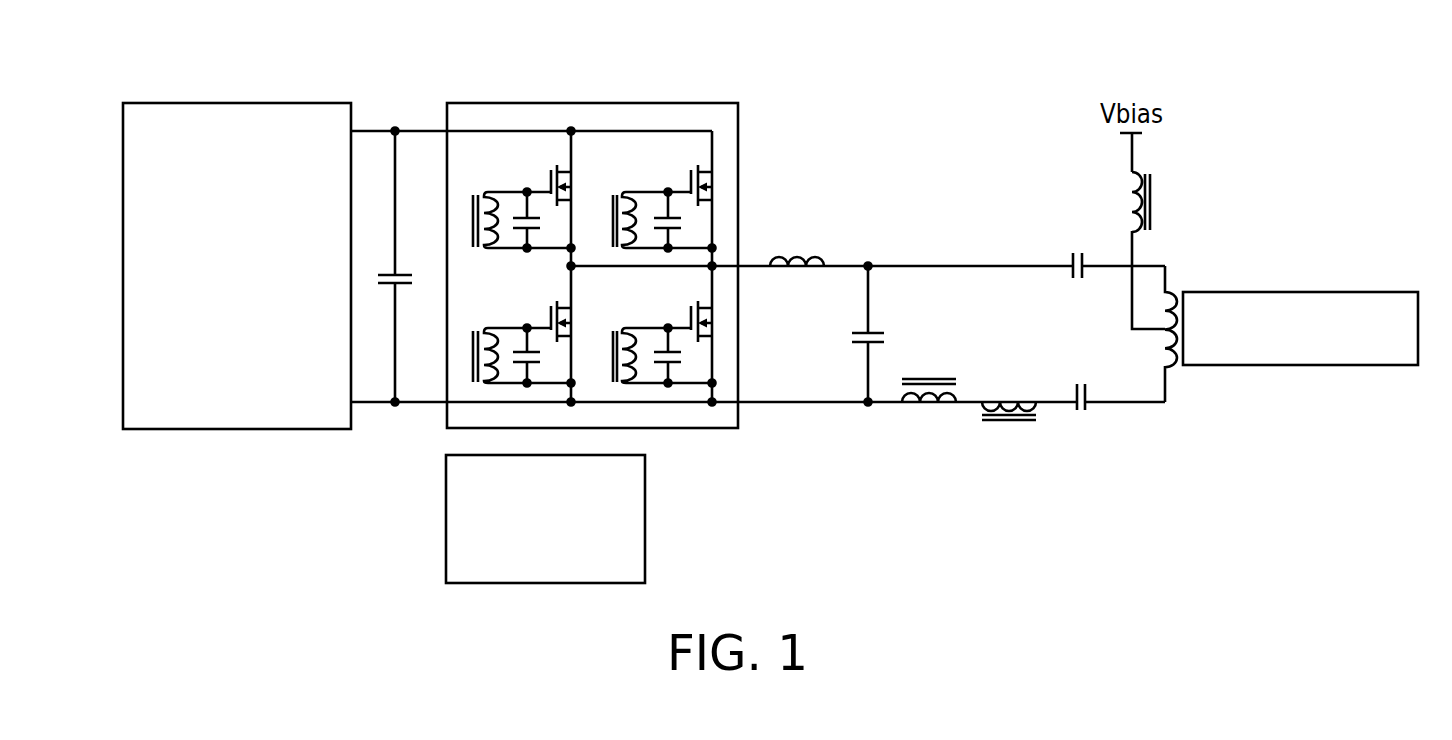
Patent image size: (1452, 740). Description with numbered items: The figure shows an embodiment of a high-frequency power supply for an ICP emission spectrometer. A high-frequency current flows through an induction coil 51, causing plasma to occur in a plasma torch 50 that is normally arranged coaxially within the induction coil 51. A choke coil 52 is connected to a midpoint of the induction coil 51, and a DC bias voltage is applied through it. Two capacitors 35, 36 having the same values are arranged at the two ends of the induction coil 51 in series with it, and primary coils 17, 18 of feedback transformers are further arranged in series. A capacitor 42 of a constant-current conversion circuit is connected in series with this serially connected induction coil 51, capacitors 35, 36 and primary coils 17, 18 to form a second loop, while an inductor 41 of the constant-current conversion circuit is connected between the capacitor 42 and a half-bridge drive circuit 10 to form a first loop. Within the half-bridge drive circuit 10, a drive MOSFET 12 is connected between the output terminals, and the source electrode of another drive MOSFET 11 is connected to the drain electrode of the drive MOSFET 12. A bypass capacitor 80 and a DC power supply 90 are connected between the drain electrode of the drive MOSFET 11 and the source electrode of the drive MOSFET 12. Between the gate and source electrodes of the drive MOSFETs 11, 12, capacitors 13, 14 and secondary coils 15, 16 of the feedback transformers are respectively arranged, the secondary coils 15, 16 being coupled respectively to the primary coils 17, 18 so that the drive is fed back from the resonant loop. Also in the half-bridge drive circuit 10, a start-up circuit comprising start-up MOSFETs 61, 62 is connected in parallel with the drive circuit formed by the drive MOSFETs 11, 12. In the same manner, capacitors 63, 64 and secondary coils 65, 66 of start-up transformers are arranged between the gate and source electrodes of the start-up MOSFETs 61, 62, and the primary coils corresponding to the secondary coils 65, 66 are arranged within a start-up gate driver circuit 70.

The half-bridge drive circuit 10 is at (603, 103).
The drive MOSFET 11 is at (688, 184).
The drive MOSFET 12 is at (688, 319).
The capacitor 13 is at (663, 215).
The capacitor 14 is at (663, 350).
The secondary coil of feedback transformer 15 is at (630, 193).
The secondary coil of feedback transformer 16 is at (630, 328).
The primary coil of feedback transformer 17 is at (1008, 421).
The primary coil of feedback transformer 18 is at (930, 378).
The capacitor 35 is at (1077, 396).
The capacitor 36 is at (1073, 259).
The inductor of constant-current conversion circuit 41 is at (797, 256).
The capacitor of constant-current conversion circuit 42 is at (876, 333).
The plasma torch 50 is at (1293, 292).
The induction coil 51 is at (1165, 351).
The choke coil 52 is at (1131, 189).
The start-up MOSFET 61 is at (548, 184).
The start-up MOSFET 62 is at (548, 319).
The capacitor 63 is at (522, 215).
The capacitor 64 is at (522, 350).
The secondary coil of start-up transformer 65 is at (490, 193).
The secondary coil of start-up transformer 66 is at (490, 328).
The start-up gate driver circuit 70 is at (645, 519).
The bypass capacitor 80 is at (397, 275).
The DC power supply 90 is at (258, 103).